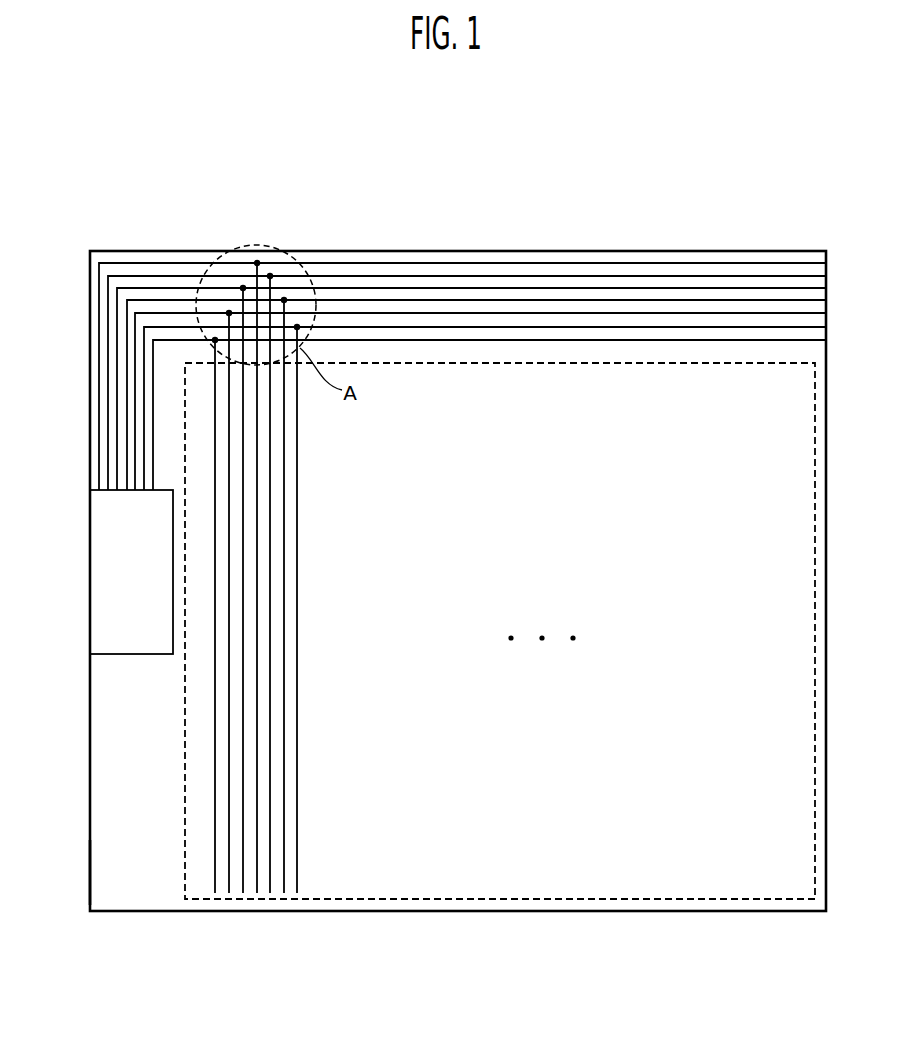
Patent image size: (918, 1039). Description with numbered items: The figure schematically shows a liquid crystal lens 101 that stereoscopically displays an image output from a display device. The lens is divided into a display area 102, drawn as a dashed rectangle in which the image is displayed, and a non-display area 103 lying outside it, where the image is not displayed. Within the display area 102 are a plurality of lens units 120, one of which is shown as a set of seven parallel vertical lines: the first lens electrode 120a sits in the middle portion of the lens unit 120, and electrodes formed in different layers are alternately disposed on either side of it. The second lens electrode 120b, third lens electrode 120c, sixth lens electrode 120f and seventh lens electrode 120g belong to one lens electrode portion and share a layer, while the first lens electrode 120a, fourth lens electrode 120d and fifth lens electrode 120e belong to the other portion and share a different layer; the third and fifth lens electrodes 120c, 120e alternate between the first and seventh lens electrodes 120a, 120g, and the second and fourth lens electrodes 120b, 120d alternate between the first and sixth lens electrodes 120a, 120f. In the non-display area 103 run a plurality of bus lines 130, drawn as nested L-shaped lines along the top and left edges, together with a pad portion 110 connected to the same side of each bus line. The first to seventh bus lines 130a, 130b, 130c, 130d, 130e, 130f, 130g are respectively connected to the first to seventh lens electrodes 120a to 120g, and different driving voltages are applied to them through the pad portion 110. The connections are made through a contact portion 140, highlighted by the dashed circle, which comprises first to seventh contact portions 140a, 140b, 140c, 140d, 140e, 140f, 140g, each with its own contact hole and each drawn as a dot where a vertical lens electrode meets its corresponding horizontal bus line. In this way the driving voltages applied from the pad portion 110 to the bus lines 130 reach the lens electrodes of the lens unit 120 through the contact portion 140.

The liquid crystal lens 101 is at (487, 184).
The display area 102 is at (562, 886).
The non-display area 103 is at (98, 872).
The pad portion 110 is at (98, 577).
The lens unit 120 is at (158, 980).
The first lens electrode 120a is at (257, 893).
The second lens electrode 120b is at (270, 893).
The third lens electrode 120c is at (243, 893).
The fourth lens electrode 120d is at (284, 893).
The fifth lens electrode 120e is at (229, 893).
The sixth lens electrode 120f is at (297, 893).
The seventh lens electrode 120g is at (215, 893).
The bus lines 130 is at (813, 187).
The first bus line 130a is at (582, 263).
The second bus line 130b is at (602, 276).
The third bus line 130c is at (637, 288).
The fourth bus line 130d is at (672, 300).
The fifth bus line 130e is at (708, 313).
The sixth bus line 130f is at (738, 327).
The seventh bus line 130g is at (775, 340).
The contact portion 140 is at (395, 184).
The first contact portion 140a is at (257, 263).
The second contact portion 140b is at (270, 276).
The third contact portion 140c is at (243, 288).
The fourth contact portion 140d is at (284, 300).
The fifth contact portion 140e is at (229, 313).
The sixth contact portion 140f is at (297, 327).
The seventh contact portion 140g is at (215, 340).